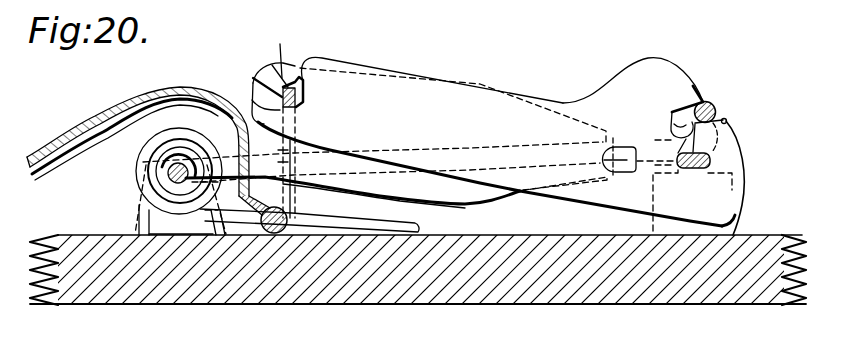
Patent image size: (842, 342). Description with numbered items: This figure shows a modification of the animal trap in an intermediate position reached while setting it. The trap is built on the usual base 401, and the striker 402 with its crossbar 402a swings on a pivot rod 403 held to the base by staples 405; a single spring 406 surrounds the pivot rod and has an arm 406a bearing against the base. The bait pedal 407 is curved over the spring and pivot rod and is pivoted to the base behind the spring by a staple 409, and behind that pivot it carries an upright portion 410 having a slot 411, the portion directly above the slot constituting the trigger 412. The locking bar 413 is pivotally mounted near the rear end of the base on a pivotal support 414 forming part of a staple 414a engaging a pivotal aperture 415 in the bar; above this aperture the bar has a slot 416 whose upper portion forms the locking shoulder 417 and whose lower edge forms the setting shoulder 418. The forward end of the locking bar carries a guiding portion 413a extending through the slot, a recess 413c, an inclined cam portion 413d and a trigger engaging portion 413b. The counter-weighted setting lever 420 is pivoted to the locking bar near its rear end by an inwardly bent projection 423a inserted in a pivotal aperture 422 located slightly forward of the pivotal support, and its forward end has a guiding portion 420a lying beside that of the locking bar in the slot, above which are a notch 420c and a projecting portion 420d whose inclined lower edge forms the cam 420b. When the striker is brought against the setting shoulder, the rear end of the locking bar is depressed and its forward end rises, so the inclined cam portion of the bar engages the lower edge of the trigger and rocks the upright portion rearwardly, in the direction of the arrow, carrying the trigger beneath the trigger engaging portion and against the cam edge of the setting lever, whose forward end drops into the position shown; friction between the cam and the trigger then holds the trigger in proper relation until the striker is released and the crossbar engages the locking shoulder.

The base 401 is at (158, 305).
The striker 402 is at (290, 170).
The crossbar 402a is at (713, 105).
The pivot rod 403 is at (166, 172).
The staples 405 is at (140, 216).
The spring 406 is at (150, 148).
The spring arm 406a is at (422, 226).
The bait pedal 407 is at (88, 120).
The staple 409 is at (181, 228).
The upright portion 410 is at (293, 236).
The slot 411 is at (292, 197).
The trigger 412 is at (285, 78).
The locking bar 413 is at (562, 103).
The guiding portion 413a is at (250, 100).
The trigger engaging portion 413b is at (297, 75).
The recess 413c is at (299, 109).
The inclined cam portion 413d is at (252, 80).
The pivotal support 414 is at (710, 157).
The staple 414a is at (736, 223).
The pivotal aperture 415 is at (711, 166).
The slot 416 is at (672, 112).
The locking shoulder 417 is at (705, 103).
The setting shoulder 418 is at (727, 122).
The counter-weighted setting lever 420 is at (377, 185).
The guiding portion 420a is at (240, 137).
The inclined cam portion 420b is at (279, 76).
The notch 420c is at (298, 147).
The projecting portion 420d is at (277, 80).
The pivotal aperture 422 is at (604, 148).
The off-set projection 423a is at (628, 148).